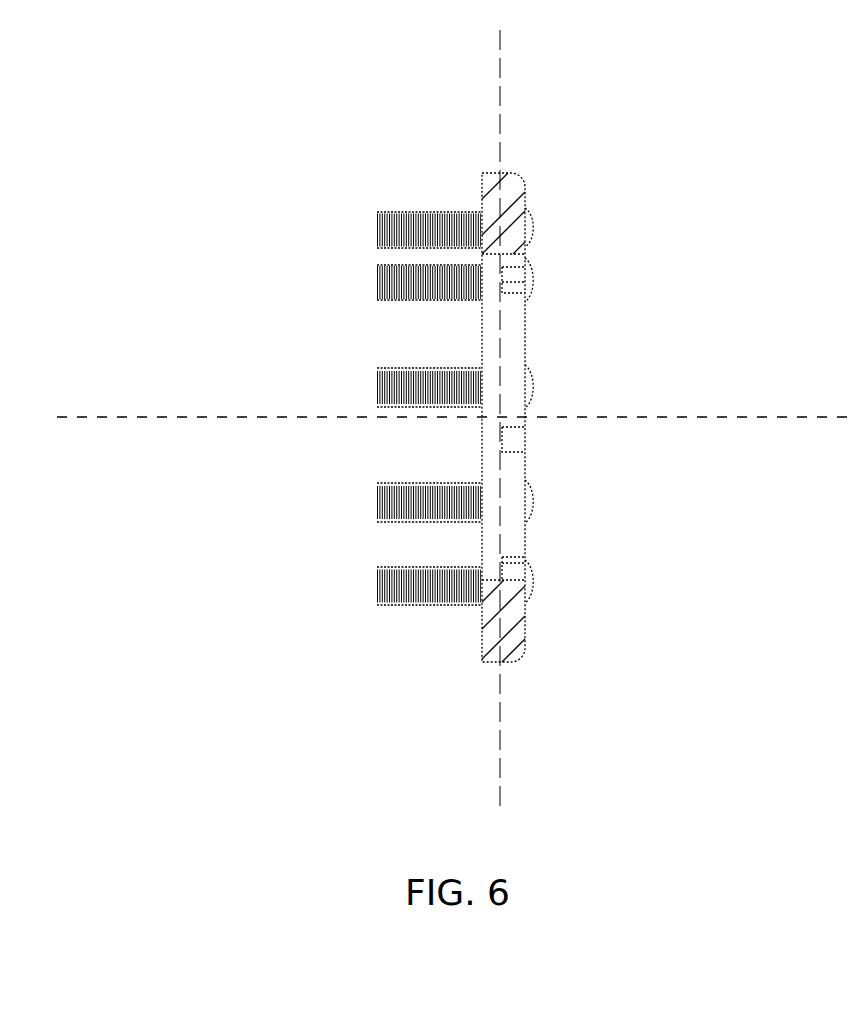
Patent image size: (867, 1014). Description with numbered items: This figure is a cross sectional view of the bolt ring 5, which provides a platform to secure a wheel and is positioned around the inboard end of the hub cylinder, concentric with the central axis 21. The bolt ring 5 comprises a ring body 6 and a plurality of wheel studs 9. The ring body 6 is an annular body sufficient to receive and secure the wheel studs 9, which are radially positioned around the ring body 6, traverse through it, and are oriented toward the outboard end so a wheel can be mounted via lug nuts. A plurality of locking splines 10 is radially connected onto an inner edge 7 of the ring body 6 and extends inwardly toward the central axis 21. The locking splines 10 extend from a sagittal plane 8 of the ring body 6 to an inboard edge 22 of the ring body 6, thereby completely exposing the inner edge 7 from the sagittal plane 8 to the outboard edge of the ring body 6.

The bolt ring 5 is at (525, 131).
The ring body 6 is at (483, 189).
The inner edge 7 is at (527, 353).
The sagittal plane 8 is at (500, 90).
The wheel studs 9 is at (377, 230).
The locking splines 10 is at (508, 280).
The central axis 21 is at (808, 418).
The inboard edge 22 is at (525, 330).